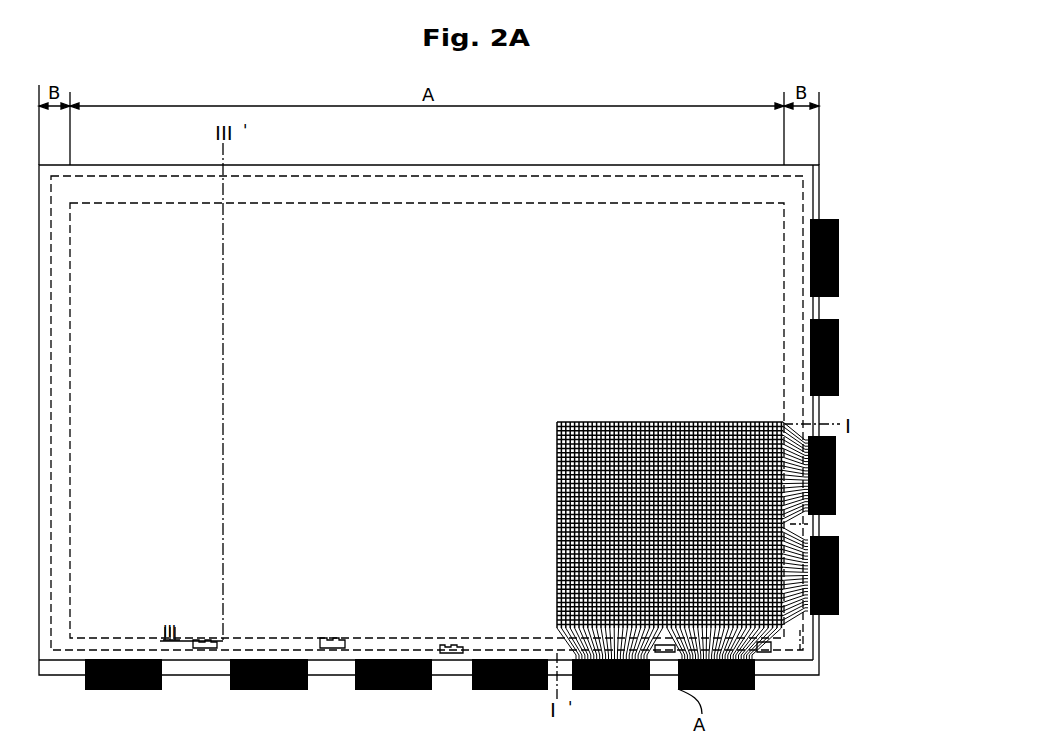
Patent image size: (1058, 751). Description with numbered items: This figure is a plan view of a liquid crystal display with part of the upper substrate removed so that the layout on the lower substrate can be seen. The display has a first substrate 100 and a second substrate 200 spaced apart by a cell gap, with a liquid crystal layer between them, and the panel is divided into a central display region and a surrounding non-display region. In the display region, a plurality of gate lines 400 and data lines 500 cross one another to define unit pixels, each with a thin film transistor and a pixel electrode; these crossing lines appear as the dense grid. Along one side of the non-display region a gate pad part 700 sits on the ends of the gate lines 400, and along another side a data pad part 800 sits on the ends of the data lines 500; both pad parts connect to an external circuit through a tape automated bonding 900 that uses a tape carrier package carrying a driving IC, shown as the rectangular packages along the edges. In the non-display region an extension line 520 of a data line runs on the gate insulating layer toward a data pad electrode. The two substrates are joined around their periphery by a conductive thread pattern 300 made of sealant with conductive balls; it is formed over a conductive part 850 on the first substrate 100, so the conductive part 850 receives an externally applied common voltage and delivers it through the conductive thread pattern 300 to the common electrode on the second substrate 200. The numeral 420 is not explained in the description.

The first substrate 100 is at (817, 206).
The second substrate 200 is at (812, 409).
The conductive thread pattern 300 is at (790, 305).
The gate lines 400 is at (776, 421).
The data lines 500 is at (737, 421).
The gate pad part 700 is at (808, 618).
The data pad part 800 is at (757, 647).
The gate line 420 is at (800, 630).
The extension line of the data line 520 is at (758, 660).
The conductive part 850 is at (665, 655).
The tape automated bonding 900 is at (838, 583).